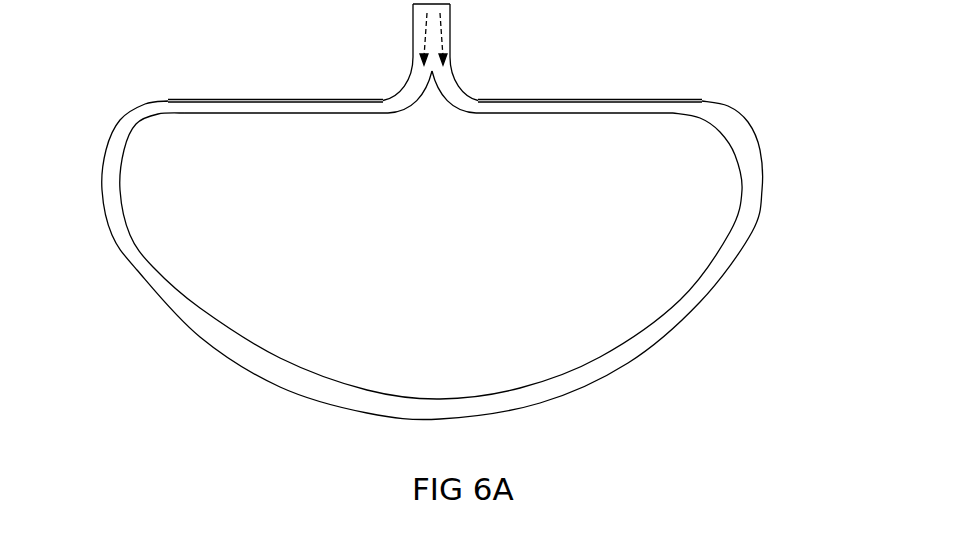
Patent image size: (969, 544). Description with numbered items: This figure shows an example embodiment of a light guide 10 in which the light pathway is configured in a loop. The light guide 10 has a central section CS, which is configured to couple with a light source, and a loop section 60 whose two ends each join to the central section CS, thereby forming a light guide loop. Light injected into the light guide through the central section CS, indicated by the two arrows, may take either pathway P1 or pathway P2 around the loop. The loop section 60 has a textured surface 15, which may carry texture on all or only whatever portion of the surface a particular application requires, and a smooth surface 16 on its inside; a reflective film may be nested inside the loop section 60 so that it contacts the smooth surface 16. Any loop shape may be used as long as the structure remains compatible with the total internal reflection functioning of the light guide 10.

The light guide 10 is at (793, 201).
The textured surface 15 is at (628, 363).
The smooth surface 16 is at (735, 160).
The loop section 60 is at (148, 269).
The central section CS is at (413, 40).
The pathway P1 is at (417, 80).
The pathway P2 is at (455, 88).